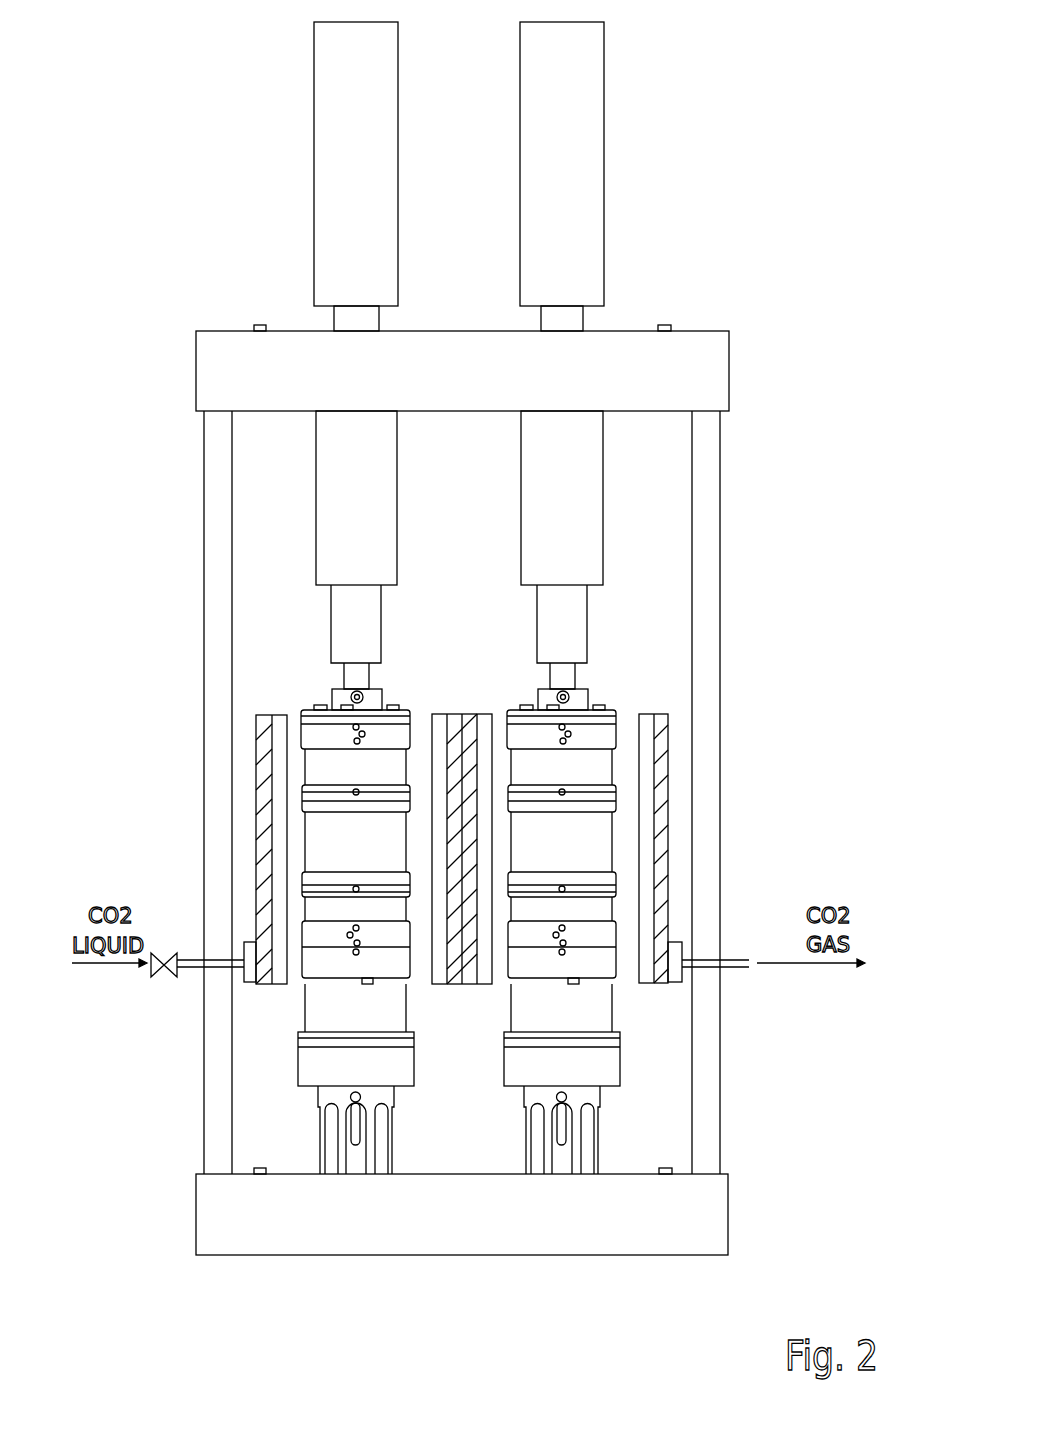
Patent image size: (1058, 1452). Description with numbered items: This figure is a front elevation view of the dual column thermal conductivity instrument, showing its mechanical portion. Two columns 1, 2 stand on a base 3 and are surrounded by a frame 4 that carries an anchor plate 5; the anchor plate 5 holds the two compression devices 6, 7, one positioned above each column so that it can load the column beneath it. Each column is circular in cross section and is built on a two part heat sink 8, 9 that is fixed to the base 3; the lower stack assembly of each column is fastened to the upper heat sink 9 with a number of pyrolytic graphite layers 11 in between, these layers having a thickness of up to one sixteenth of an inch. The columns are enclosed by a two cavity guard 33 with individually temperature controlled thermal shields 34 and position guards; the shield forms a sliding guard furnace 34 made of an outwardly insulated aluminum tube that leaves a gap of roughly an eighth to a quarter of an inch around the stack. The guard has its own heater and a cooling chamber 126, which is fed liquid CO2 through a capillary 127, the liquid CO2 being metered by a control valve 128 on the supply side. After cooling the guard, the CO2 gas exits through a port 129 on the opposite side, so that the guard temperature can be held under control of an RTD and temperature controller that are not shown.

The column 1 is at (332, 543).
The column 2 is at (587, 520).
The base 3 is at (679, 1210).
The frame 4 is at (708, 732).
The anchor plate 5 is at (712, 371).
The compression device 6 is at (335, 220).
The compression device 7 is at (570, 194).
The heat sink 8 is at (612, 1058).
The heat sink 9 is at (618, 1039).
The pyrolytic graphite layers 11 is at (305, 1043).
The two cavity guard 33 is at (260, 723).
The sliding guard furnace 34 is at (278, 862).
The cooling chamber 126 is at (683, 950).
The capillary 127 is at (199, 960).
The control valve 128 is at (151, 973).
The port 129 is at (732, 967).